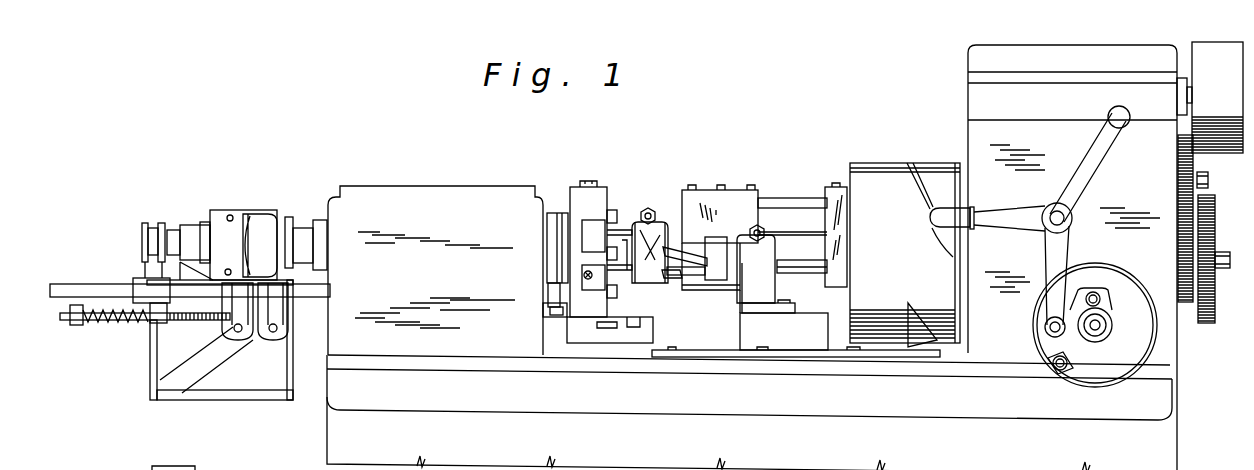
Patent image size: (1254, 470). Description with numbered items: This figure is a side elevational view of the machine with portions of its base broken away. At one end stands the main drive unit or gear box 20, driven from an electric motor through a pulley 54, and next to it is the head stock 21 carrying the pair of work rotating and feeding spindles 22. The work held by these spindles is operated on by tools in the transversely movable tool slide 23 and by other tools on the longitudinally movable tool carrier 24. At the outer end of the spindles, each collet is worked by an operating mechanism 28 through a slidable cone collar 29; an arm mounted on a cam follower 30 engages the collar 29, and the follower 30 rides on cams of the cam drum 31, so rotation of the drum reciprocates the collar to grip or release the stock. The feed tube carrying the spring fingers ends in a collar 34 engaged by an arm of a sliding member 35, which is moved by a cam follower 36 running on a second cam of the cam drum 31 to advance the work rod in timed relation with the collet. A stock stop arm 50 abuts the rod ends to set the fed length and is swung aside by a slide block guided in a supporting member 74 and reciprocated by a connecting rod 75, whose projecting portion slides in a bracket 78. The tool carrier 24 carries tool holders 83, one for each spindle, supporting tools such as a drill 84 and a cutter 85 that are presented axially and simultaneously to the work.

The main drive unit or gear box 20 is at (1053, 31).
The head stock 21 is at (441, 201).
The work rotating and feeding spindles 22 is at (549, 267).
The transversely movable tool slide 23 is at (609, 180).
The longitudinally movable tool carrier 24 is at (721, 327).
The operating mechanism 28 is at (250, 205).
The collar 29 is at (291, 218).
The cam follower 30 is at (280, 315).
The cam drum 31 is at (235, 400).
The collar 34 is at (151, 228).
The sliding member 35 is at (143, 280).
The cam follower 36 is at (233, 323).
The stock stop arm 50 is at (645, 211).
The pulley 54 is at (1210, 42).
The supporting member 74 is at (690, 208).
The connecting rod 75 is at (781, 203).
The bracket 78 is at (832, 218).
The tool holders 83 is at (768, 242).
The drill 84 is at (704, 248).
The cutter 85 is at (677, 280).